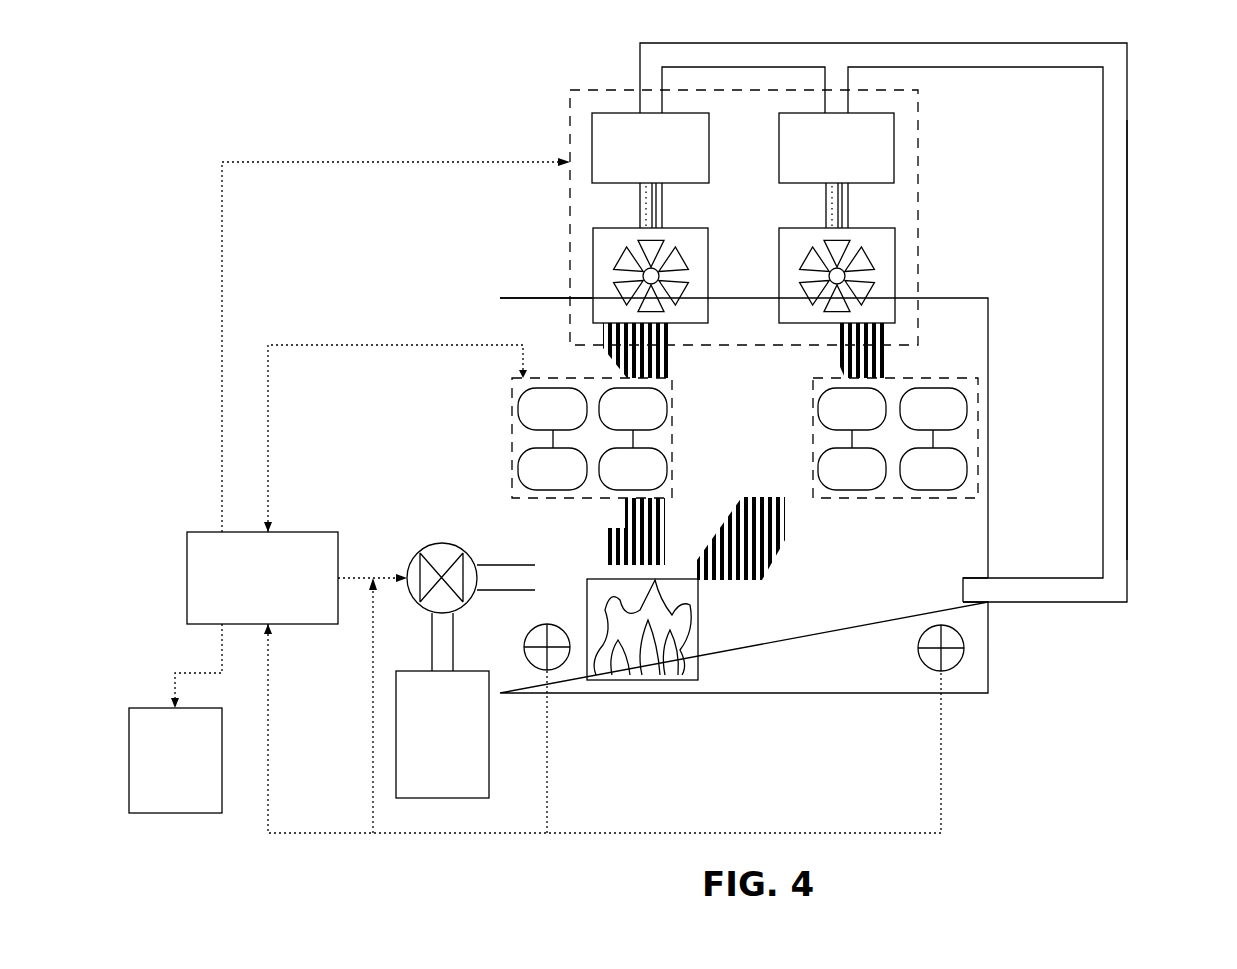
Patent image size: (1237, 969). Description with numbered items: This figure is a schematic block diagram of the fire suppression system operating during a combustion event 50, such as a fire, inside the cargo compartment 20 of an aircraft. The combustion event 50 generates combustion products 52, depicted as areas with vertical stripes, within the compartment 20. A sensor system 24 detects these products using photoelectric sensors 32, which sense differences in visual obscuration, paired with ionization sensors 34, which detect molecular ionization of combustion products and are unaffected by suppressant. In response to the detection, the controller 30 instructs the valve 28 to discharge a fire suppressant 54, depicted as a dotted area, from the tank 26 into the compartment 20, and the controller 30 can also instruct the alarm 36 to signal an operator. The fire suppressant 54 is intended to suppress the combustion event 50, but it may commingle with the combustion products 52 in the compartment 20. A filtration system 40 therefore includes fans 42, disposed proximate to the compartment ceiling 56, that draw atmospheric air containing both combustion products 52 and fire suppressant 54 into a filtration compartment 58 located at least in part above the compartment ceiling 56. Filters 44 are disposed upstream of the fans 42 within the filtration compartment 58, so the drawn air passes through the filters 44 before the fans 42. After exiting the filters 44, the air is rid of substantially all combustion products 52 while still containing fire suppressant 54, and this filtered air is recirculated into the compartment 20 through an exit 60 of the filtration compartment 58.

The cargo compartment 20 is at (940, 293).
The sensor system 24 is at (513, 415).
The tank 26 is at (422, 671).
The valve 28 is at (442, 543).
The controller 30 is at (198, 533).
The photoelectric sensor 32 is at (553, 388).
The ionization sensor 34 is at (553, 490).
The alarm 36 is at (152, 708).
The filtration system 40 is at (617, 82).
The fan 42 is at (592, 228).
The filter 44 is at (592, 113).
The combustion event 50 is at (640, 680).
The combustion products 52 is at (658, 222).
The fire suppressant 54 is at (888, 55).
The compartment ceiling 56 is at (548, 299).
The filtration compartment 58 is at (1136, 163).
The exit 60 is at (963, 578).